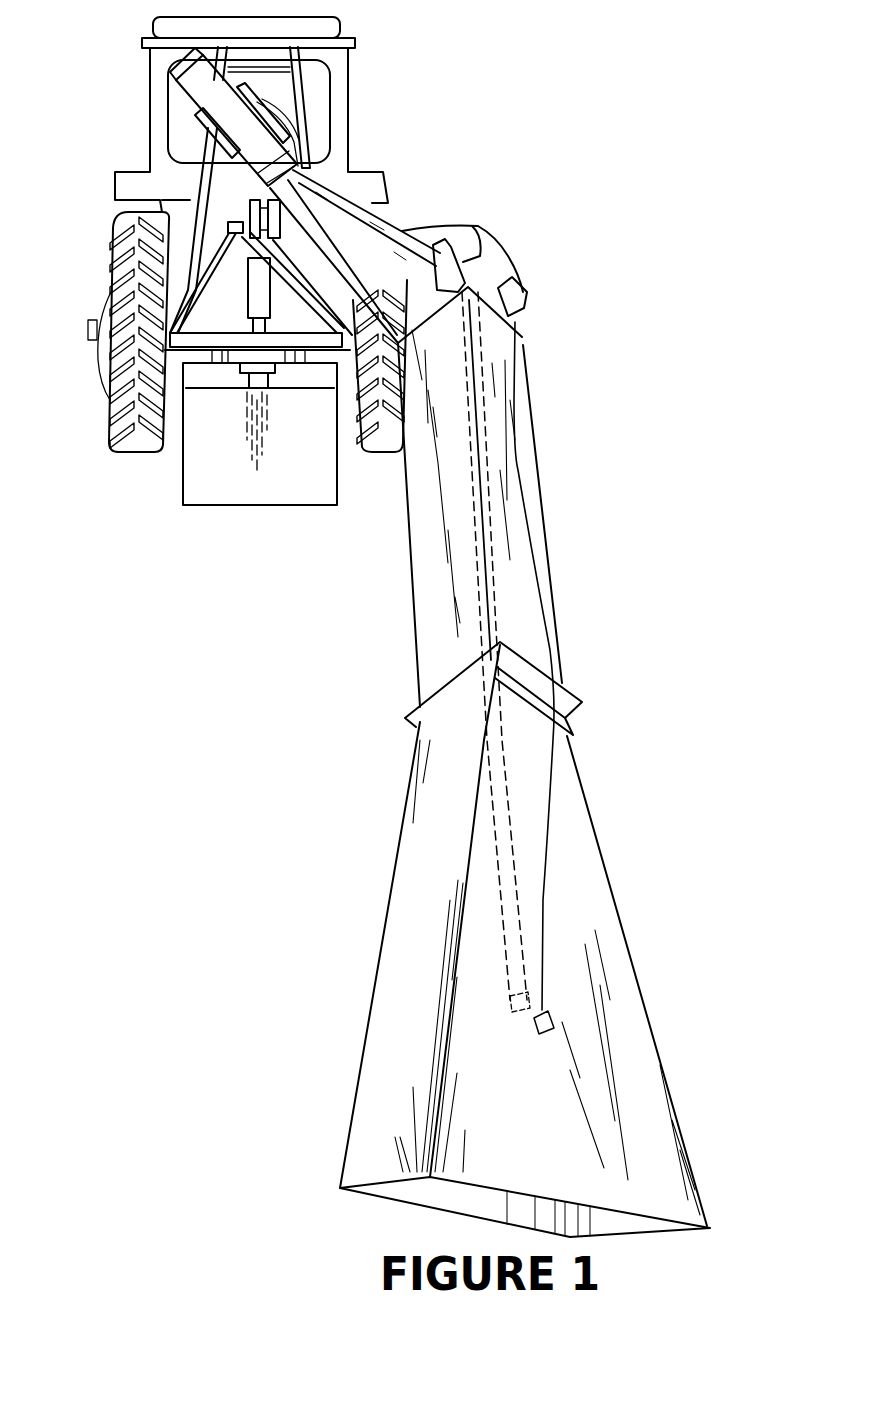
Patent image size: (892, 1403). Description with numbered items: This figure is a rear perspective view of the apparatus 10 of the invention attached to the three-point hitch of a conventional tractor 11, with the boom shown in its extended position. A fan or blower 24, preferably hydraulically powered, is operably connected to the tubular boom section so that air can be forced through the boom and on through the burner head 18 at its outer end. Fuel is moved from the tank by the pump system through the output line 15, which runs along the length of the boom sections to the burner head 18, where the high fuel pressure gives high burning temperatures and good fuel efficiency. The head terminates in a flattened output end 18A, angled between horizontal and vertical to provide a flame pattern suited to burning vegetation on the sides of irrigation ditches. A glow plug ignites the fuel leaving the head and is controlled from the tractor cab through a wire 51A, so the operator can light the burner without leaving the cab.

The apparatus 10 is at (586, 297).
The tractor 11 is at (110, 200).
The output line 15 is at (472, 510).
The burner head 18 is at (650, 1100).
The flattened output end 18A is at (377, 1192).
The fan or blower 24 is at (203, 97).
The wire 51A is at (547, 906).